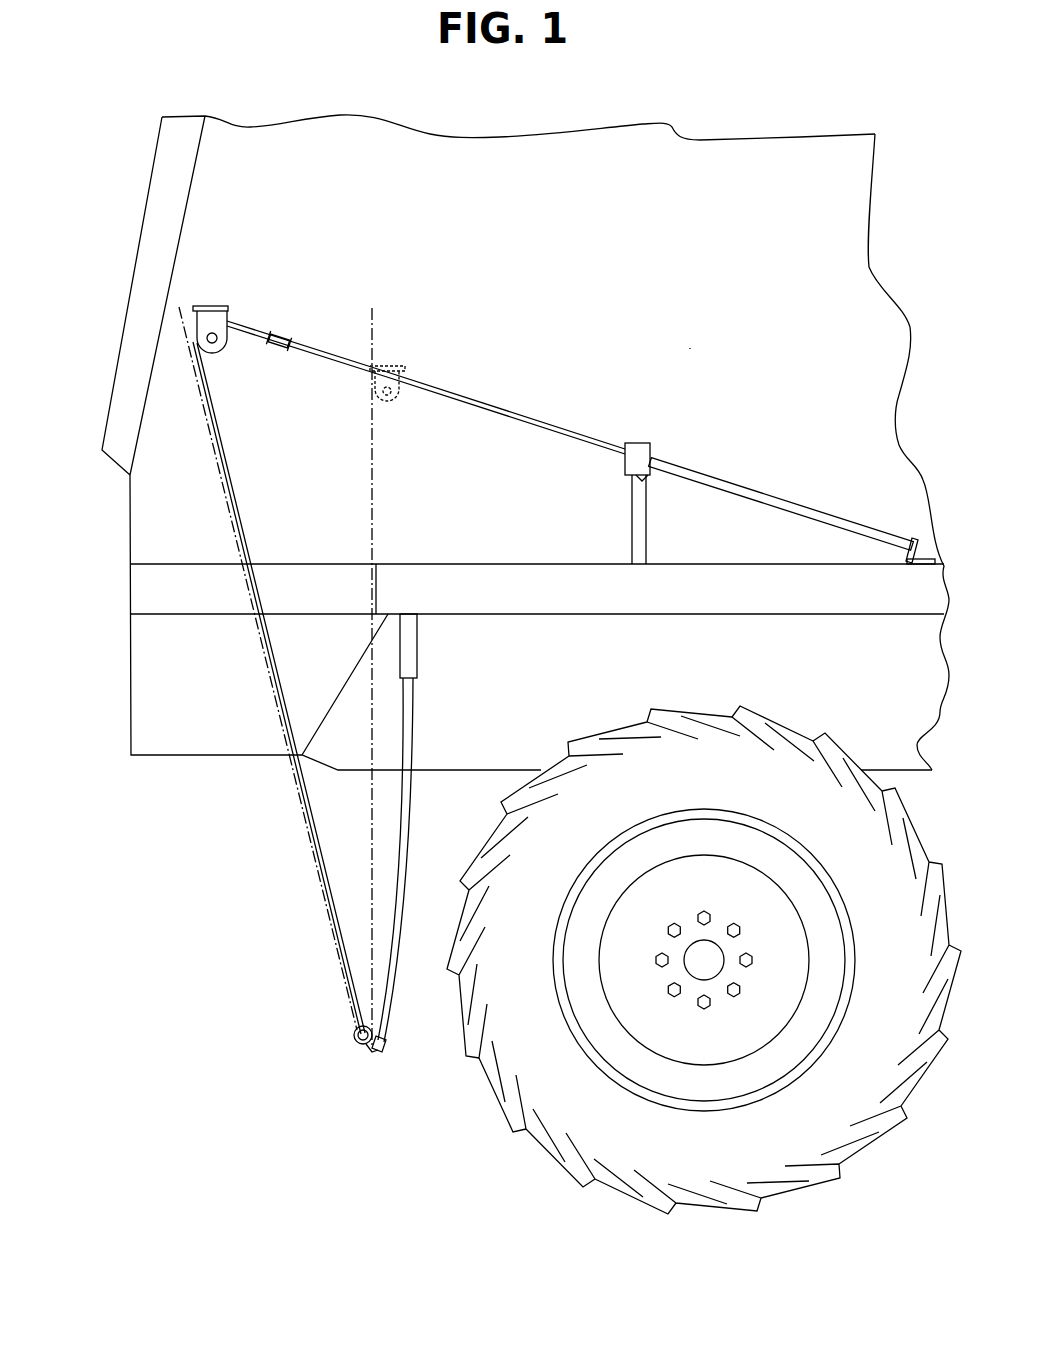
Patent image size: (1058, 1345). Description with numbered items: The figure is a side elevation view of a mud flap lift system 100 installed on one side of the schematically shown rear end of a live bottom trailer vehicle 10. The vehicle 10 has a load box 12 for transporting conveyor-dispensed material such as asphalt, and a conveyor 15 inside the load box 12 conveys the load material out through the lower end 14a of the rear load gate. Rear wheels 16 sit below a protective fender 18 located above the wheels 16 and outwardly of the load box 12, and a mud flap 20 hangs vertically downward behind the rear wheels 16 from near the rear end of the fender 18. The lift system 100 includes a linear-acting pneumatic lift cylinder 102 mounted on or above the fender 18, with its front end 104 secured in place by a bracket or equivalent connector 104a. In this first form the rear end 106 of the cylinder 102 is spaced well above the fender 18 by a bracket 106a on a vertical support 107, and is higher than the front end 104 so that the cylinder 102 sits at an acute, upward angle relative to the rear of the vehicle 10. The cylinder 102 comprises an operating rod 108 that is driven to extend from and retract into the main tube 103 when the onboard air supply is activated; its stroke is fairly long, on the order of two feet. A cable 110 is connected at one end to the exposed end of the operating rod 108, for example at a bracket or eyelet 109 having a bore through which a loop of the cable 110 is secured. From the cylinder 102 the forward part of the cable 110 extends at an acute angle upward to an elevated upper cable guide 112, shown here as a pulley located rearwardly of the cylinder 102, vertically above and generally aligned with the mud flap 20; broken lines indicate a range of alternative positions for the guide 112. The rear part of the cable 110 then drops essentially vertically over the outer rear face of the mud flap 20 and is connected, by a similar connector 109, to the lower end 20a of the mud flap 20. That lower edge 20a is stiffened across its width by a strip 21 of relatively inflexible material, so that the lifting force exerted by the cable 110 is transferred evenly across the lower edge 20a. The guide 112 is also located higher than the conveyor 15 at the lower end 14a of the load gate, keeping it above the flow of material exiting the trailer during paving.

The live bottom trailer vehicle 10 is at (887, 142).
The load box 12 is at (728, 157).
The lower end of load gate 14a is at (112, 497).
The conveyor 15 is at (112, 527).
The rear wheels 16 is at (855, 1148).
The fender 18 is at (467, 578).
The mud flap 20 is at (415, 812).
The lower end of mud flap 20a is at (370, 1054).
The bracket or strip 21 is at (386, 1050).
The mud flap lift system 100 is at (692, 347).
The pneumatic lift cylinder 102 is at (792, 532).
The main tube 103 is at (712, 478).
The front end of cylinder 104 is at (895, 548).
The bracket or connector 104a is at (930, 558).
The rear end of cylinder 106 is at (632, 443).
The bracket 106a is at (648, 478).
The vertical support 107 is at (630, 517).
The operating rod 108 is at (478, 395).
The bracket or eyelet 109 is at (285, 338).
The cable 110 is at (248, 327).
The upper cable guide 112 is at (212, 316).